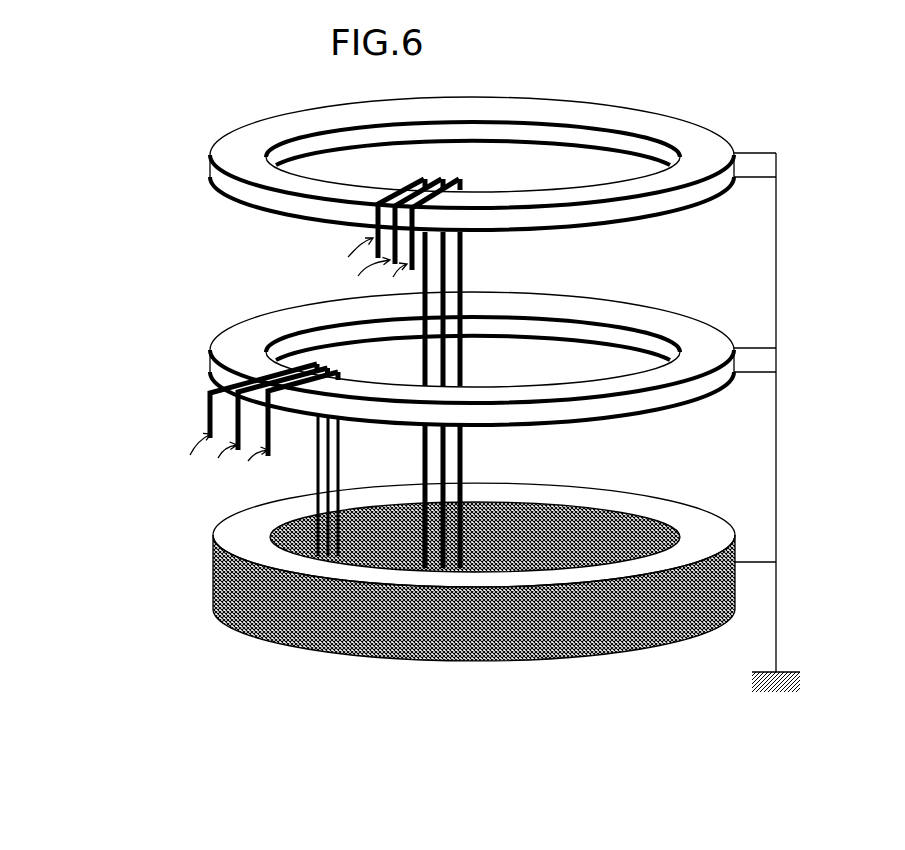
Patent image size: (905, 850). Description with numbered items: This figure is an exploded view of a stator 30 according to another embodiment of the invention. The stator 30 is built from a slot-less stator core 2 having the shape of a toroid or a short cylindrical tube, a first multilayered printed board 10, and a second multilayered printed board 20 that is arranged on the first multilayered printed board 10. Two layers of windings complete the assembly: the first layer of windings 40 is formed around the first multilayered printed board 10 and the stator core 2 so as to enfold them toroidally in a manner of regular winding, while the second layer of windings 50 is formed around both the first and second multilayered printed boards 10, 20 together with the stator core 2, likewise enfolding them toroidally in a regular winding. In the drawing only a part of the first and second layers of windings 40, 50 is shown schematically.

The slot-less stator core 2 is at (292, 636).
The first multilayered printed board 10 is at (172, 358).
The second multilayered printed board 20 is at (172, 143).
The stator 30 is at (190, 646).
The first layer of windings 40 is at (168, 481).
The second layer of windings 50 is at (325, 263).